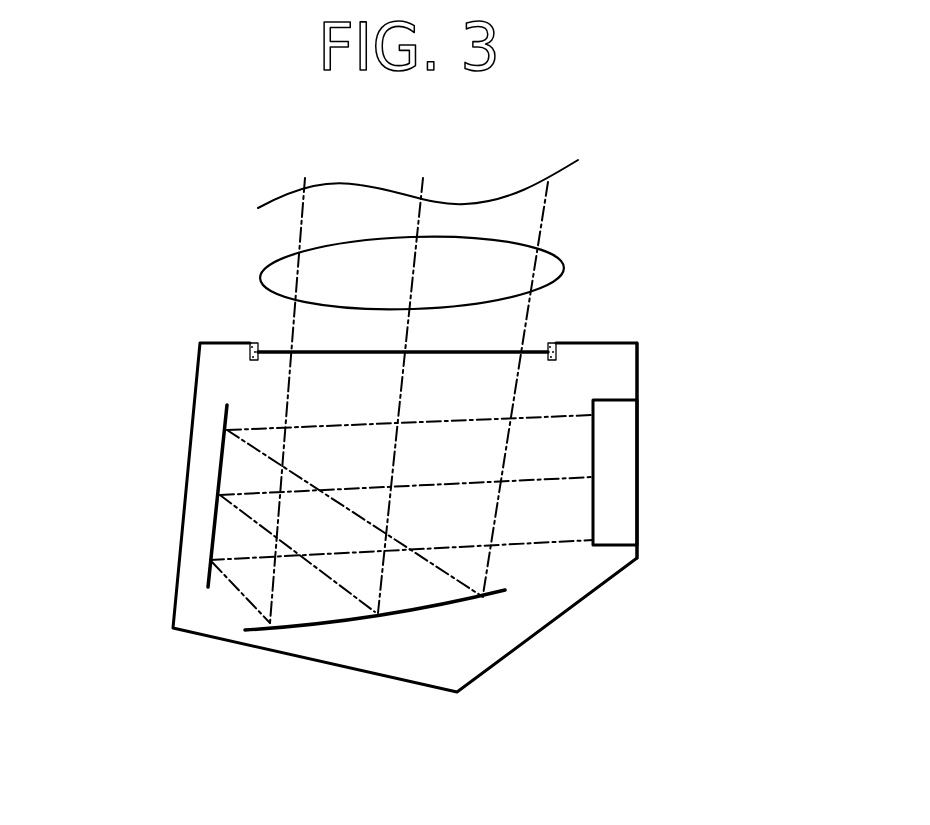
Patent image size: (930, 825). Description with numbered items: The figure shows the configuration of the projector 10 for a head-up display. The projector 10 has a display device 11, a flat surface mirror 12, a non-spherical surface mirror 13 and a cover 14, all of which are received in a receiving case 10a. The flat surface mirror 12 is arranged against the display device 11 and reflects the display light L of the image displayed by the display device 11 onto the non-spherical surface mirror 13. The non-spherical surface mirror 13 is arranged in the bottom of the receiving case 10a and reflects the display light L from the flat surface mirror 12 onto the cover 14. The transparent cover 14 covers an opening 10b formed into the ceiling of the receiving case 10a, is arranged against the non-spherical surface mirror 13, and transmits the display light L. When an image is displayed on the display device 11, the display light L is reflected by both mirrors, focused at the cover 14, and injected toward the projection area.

The projector 10 is at (633, 291).
The receiving case 10a is at (637, 370).
The opening 10b is at (258, 343).
The display device 11 is at (618, 467).
The flat surface mirror 12 is at (215, 523).
The non-spherical surface mirror 13 is at (467, 603).
The cover 14 is at (550, 348).
The display light L is at (262, 275).